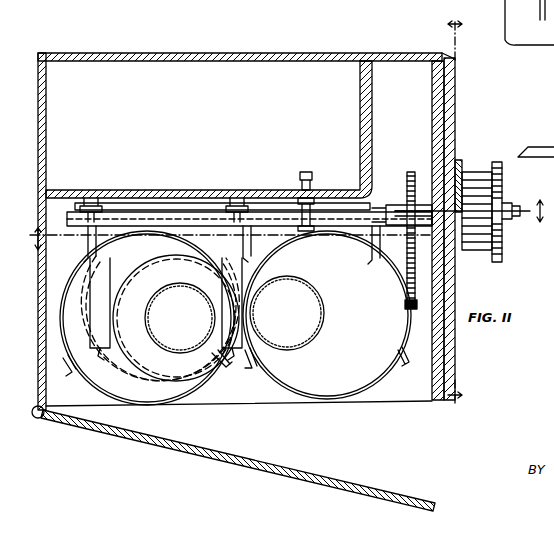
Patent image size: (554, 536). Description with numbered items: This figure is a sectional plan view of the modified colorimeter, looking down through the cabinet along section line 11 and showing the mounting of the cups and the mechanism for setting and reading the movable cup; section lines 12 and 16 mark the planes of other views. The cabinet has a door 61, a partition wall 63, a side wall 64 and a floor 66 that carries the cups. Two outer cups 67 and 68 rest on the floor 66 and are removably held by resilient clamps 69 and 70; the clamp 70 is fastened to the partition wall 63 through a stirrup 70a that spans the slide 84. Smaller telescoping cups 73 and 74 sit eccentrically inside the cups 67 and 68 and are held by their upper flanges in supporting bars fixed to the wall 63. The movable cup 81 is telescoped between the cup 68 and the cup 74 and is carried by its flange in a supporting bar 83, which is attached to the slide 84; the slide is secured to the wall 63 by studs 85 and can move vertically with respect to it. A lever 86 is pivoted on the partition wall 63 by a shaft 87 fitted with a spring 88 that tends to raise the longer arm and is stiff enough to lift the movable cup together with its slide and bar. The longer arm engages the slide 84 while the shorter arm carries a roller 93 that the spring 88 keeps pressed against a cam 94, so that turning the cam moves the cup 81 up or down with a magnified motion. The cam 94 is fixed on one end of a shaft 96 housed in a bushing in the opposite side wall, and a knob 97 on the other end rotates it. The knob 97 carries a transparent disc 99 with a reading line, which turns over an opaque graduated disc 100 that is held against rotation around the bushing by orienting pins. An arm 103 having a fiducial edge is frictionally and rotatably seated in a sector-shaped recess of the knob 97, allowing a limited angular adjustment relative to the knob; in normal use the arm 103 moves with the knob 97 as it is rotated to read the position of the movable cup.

The section line 11 is at (545, 211).
The section line 12 is at (224, 238).
The section line 16 is at (454, 211).
The door 61 is at (304, 470).
The partition wall 63 is at (368, 118).
The side wall 64 is at (46, 104).
The floor 66 is at (390, 404).
The cup 67 is at (404, 300).
The cup 68 is at (68, 296).
The resilient clamp 69 is at (376, 236).
The resilient clamp 70 is at (88, 256).
The stirrup 70a is at (240, 203).
The telescoping cup 73 is at (328, 304).
The telescoping cup 74 is at (146, 322).
The movable cup 81 is at (113, 324).
The supporting bar 83 is at (90, 320).
The slide 84 is at (188, 203).
The stud 85 is at (98, 196).
The lever 86 is at (218, 224).
The shaft 87 is at (306, 172).
The spring 88 is at (316, 210).
The roller 93 is at (400, 205).
The cam 94 is at (407, 178).
The shaft 96 is at (508, 203).
The knob 97 is at (502, 236).
The transparent disc 99 is at (450, 96).
The graduated disc 100 is at (446, 126).
The arm 103 is at (460, 160).